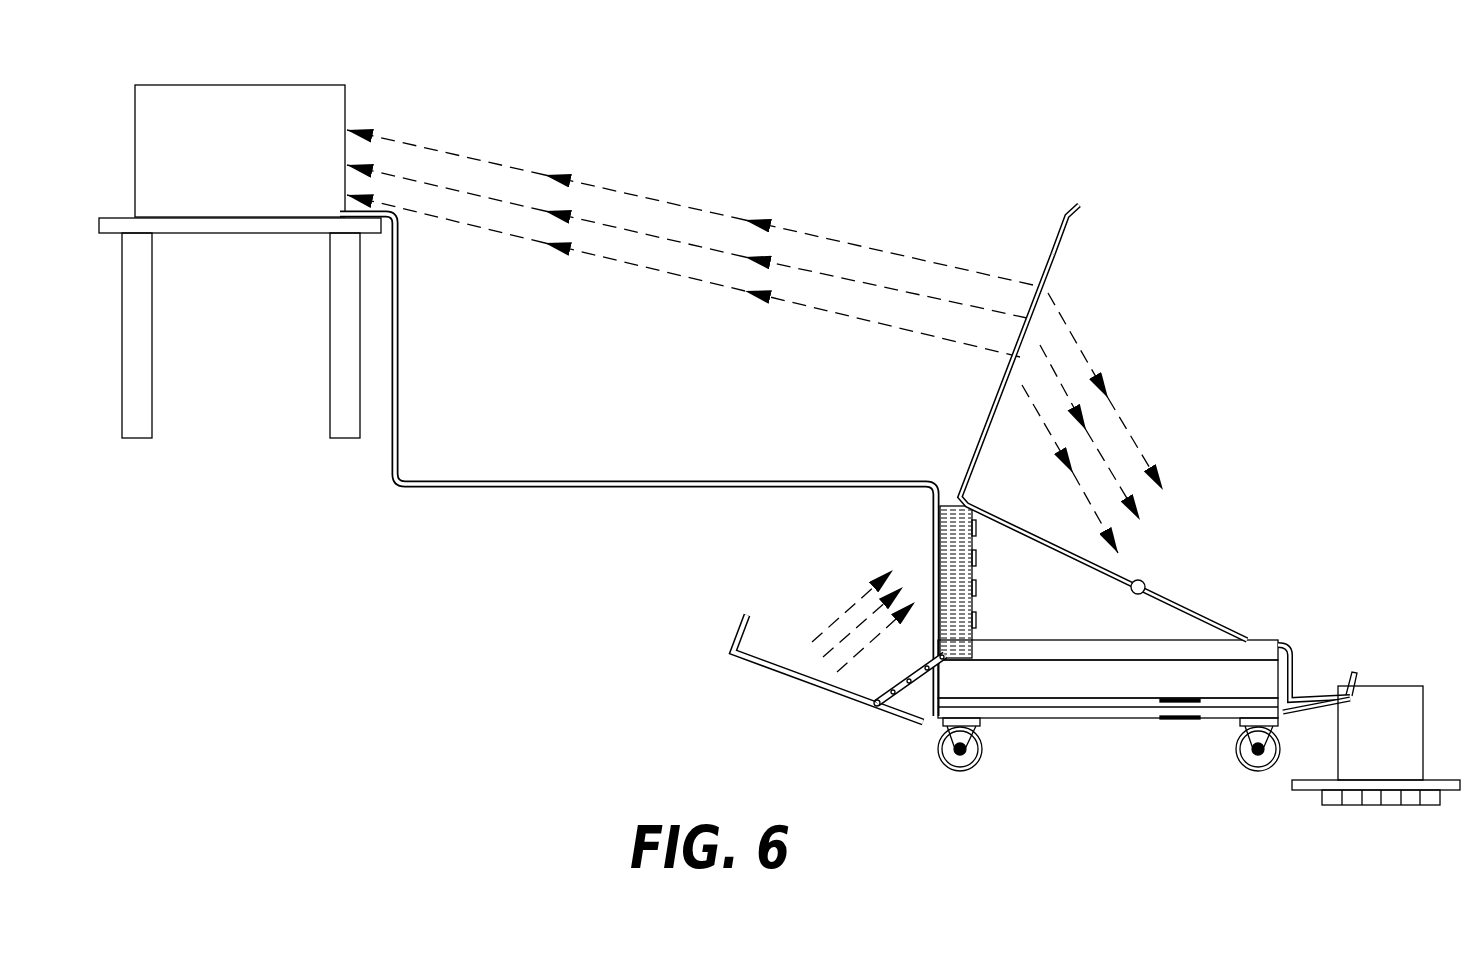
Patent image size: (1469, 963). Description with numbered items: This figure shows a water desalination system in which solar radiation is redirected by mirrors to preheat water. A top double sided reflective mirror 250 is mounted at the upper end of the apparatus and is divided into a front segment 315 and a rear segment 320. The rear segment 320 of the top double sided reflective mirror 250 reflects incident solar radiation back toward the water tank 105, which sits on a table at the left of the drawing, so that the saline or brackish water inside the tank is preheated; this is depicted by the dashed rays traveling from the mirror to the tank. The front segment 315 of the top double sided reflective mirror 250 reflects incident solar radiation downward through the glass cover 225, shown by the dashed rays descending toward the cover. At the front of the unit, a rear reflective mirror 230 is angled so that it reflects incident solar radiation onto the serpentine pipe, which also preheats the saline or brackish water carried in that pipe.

The water tank 105 is at (362, 84).
The top double sided reflective mirror 250 is at (966, 431).
The front segment 315 is at (1072, 242).
The rear segment 320 is at (1043, 220).
The glass cover 225 is at (1147, 585).
The rear reflective mirror 230 is at (712, 652).